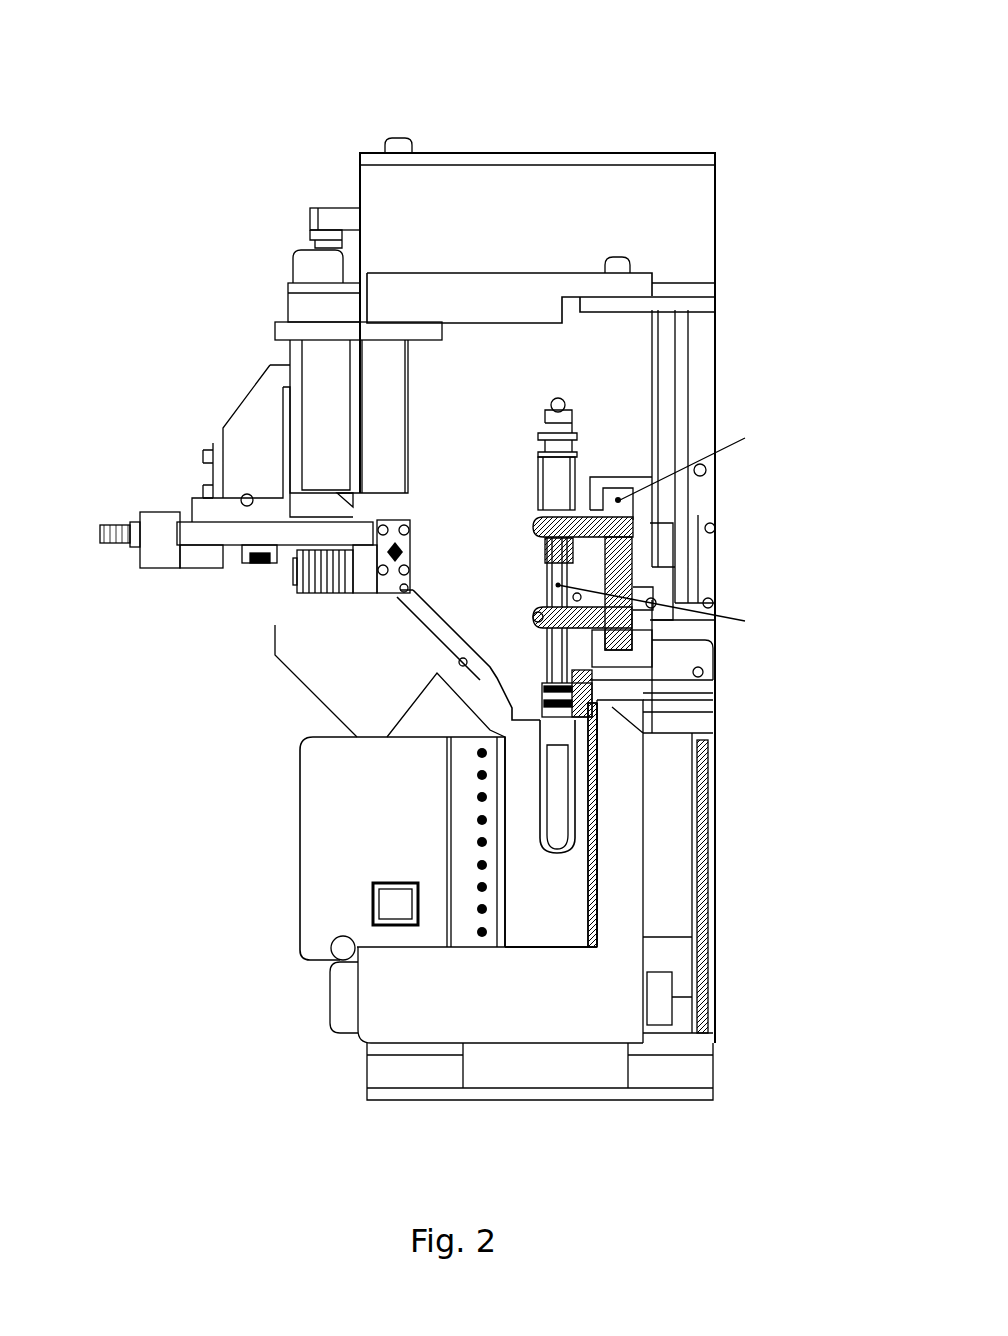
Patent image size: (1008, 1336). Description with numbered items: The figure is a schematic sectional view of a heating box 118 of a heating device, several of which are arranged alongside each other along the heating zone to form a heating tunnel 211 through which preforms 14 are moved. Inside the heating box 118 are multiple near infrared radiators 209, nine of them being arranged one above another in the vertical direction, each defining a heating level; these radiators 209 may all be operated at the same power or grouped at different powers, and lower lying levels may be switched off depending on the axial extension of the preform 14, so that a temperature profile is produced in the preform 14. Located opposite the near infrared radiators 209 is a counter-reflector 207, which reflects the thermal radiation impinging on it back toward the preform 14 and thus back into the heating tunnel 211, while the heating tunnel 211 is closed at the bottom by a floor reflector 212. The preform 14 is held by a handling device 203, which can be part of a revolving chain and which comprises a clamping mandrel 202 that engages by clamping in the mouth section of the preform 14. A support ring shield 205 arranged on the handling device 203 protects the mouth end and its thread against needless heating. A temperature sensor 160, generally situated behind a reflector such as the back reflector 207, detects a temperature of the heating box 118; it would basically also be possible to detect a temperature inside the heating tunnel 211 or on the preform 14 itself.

The heating box 118 is at (688, 86).
The clamping mandrel 202 is at (563, 552).
The handling device 203 is at (617, 555).
The support ring shield 205 is at (585, 695).
The preform 14 is at (558, 802).
The counter-reflector 207 is at (598, 888).
The near infrared radiators 209 is at (440, 845).
The temperature sensor 160 is at (395, 908).
The floor reflector 212 is at (530, 947).
The heating tunnel 211 is at (573, 920).